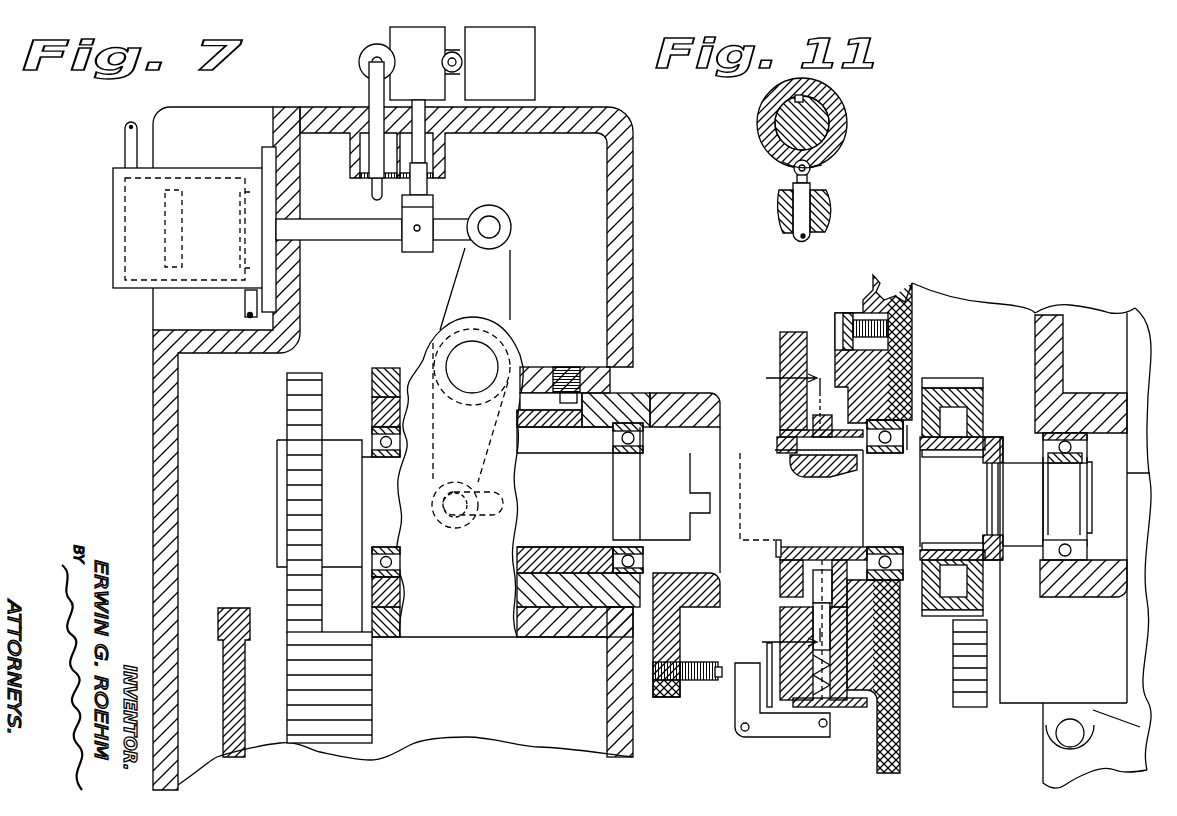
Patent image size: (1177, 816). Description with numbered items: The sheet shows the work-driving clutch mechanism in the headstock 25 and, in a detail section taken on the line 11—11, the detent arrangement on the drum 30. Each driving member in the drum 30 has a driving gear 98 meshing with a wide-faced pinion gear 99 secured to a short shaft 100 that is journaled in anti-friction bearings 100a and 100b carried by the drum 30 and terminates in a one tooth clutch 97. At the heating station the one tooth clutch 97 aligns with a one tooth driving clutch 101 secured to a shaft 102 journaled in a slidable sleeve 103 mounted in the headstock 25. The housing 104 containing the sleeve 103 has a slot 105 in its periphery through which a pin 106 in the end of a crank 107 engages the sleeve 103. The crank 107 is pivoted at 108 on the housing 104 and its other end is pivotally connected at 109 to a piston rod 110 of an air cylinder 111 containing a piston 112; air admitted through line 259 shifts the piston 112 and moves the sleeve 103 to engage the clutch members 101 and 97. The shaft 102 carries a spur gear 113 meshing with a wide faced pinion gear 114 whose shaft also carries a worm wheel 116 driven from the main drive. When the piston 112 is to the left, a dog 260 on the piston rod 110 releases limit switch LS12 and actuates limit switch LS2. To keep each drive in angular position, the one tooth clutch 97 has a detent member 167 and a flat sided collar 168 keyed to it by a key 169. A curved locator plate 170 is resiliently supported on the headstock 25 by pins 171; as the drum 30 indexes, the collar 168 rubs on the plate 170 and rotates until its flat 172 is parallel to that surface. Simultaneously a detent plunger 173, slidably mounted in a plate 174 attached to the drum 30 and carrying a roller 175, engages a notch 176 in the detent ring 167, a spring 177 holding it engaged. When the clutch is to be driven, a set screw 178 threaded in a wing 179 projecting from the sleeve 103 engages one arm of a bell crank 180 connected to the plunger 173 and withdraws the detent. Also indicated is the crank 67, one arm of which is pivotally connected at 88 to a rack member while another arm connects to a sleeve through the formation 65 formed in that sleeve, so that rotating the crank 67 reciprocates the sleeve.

In FIG. 7, the headstock 25 is at (627, 260).
In FIG. 7, the limit switch LS2 is at (388, 33).
In FIG. 7, the limit switch LS12 is at (535, 44).
In FIG. 7, the air cylinder 111 is at (113, 203).
In FIG. 7, the piston 112 is at (222, 195).
In FIG. 7, the air line 259 is at (245, 305).
In FIG. 7, the piston rod 110 is at (349, 240).
In FIG. 7, the dog 260 is at (425, 200).
In FIG. 7, the pivotal connection 109 is at (488, 228).
In FIG. 7, the pivot 108 is at (458, 357).
In FIG. 7, the crank 107 is at (447, 410).
In FIG. 7, the pin 106 is at (432, 505).
In FIG. 7, the slot 105 is at (505, 505).
In FIG. 7, the spur gear 113 is at (303, 373).
In FIG. 7, the wide faced pinion gear 114 is at (340, 632).
In FIG. 7, the worm wheel 116 is at (232, 609).
In FIG. 7, the shaft 102 is at (583, 443).
In FIG. 7, the slidable sleeve 103 is at (615, 393).
In FIG. 7, the one tooth driving clutch 101 is at (667, 455).
In FIG. 7, the housing 104 is at (552, 632).
In FIG. 7, the set screw 178 is at (705, 681).
In FIG. 7, the wing 179 is at (673, 698).
In FIG. 11, the short shaft 100 is at (813, 117).
In FIG. 11, the detent member 167 is at (838, 134).
In FIG. 11, the roller 175 is at (810, 170).
In FIG. 11, the notch 176 is at (785, 163).
In FIG. 11, the detent plunger 173 is at (805, 207).
In FIG. 11, the plate 174 is at (824, 214).
In FIG. 11, the curved locator plate 170 is at (780, 350).
In FIG. 11, the section line 11 is at (779, 512).
In FIG. 11, the pins 171 is at (783, 413).
In FIG. 11, the flat 172 is at (783, 436).
In FIG. 11, the wide-faced pinion gear 99 is at (950, 378).
In FIG. 11, the key 169 is at (838, 471).
In FIG. 11, the flat sided collar 168 is at (790, 547).
In FIG. 11, the one tooth clutch 97 is at (768, 547).
In FIG. 11, the anti-friction bearing 100b is at (900, 583).
In FIG. 11, the anti-friction bearing 100a is at (1045, 597).
In FIG. 11, the pivotal connection 88 is at (1100, 720).
In FIG. 11, the driving gear 98 is at (972, 707).
In FIG. 11, the formation in sleeve 65 is at (1013, 704).
In FIG. 11, the crank 67 is at (1048, 760).
In FIG. 11, the drum 30 is at (878, 755).
In FIG. 11, the spring 177 is at (813, 685).
In FIG. 11, the bell crank 180 is at (735, 716).